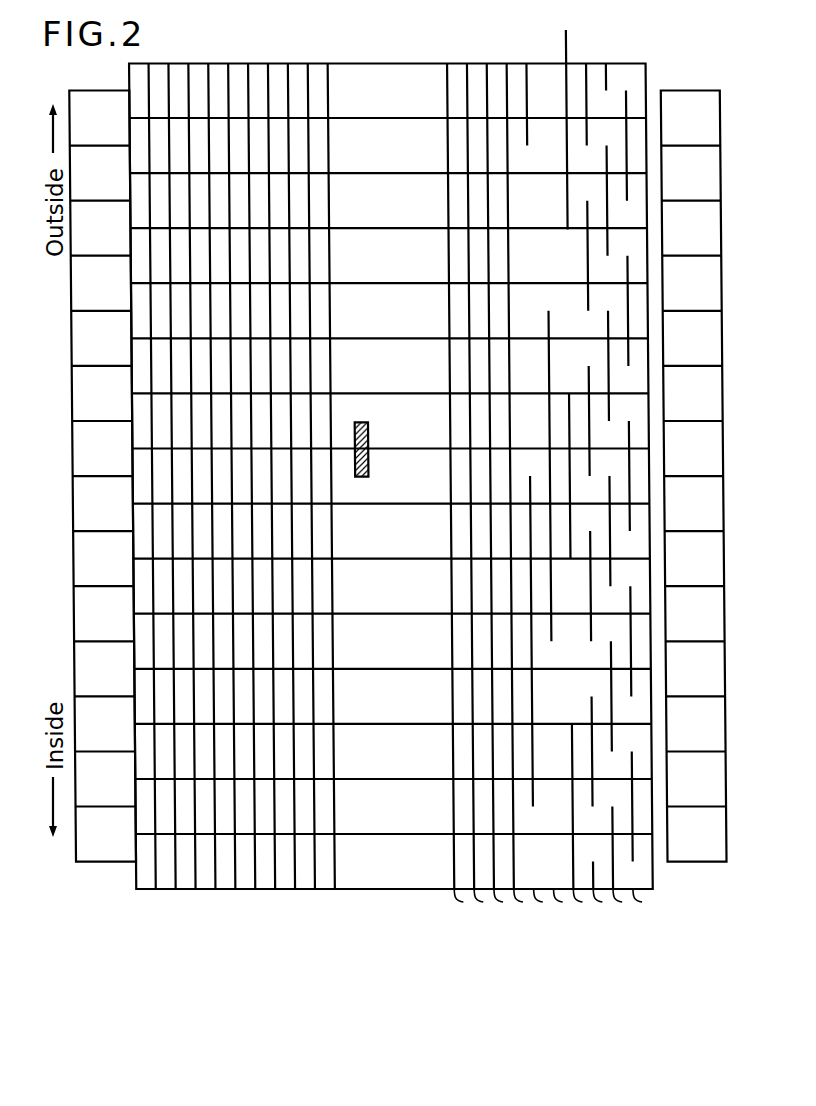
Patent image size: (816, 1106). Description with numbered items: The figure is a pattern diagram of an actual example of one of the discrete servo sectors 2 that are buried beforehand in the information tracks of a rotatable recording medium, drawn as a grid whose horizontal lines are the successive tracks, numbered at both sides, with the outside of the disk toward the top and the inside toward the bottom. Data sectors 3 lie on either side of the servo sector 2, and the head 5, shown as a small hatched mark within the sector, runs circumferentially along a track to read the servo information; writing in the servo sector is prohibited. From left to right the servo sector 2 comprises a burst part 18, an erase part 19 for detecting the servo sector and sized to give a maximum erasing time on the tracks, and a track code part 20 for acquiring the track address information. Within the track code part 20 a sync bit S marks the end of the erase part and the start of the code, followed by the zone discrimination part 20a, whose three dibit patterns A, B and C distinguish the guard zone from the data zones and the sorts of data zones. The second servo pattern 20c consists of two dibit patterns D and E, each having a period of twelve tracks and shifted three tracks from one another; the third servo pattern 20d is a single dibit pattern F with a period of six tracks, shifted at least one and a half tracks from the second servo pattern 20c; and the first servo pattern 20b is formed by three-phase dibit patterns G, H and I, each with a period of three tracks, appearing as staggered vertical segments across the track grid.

The servo sector 2 is at (398, 555).
The data sector 3 is at (745, 940).
The head 5 is at (362, 438).
The burst part 18 is at (138, 933).
The erase part 19 is at (335, 933).
The track code part 20 is at (550, 503).
The zone discrimination part 20a is at (457, 58).
The first servo pattern 20b is at (573, 58).
The second servo pattern 20c is at (513, 58).
The third servo pattern 20d is at (571, 447).